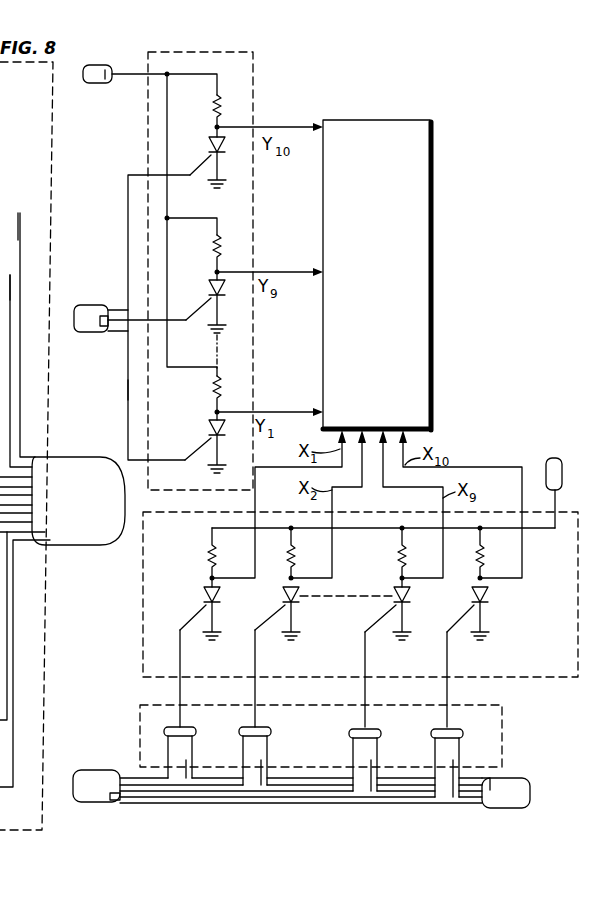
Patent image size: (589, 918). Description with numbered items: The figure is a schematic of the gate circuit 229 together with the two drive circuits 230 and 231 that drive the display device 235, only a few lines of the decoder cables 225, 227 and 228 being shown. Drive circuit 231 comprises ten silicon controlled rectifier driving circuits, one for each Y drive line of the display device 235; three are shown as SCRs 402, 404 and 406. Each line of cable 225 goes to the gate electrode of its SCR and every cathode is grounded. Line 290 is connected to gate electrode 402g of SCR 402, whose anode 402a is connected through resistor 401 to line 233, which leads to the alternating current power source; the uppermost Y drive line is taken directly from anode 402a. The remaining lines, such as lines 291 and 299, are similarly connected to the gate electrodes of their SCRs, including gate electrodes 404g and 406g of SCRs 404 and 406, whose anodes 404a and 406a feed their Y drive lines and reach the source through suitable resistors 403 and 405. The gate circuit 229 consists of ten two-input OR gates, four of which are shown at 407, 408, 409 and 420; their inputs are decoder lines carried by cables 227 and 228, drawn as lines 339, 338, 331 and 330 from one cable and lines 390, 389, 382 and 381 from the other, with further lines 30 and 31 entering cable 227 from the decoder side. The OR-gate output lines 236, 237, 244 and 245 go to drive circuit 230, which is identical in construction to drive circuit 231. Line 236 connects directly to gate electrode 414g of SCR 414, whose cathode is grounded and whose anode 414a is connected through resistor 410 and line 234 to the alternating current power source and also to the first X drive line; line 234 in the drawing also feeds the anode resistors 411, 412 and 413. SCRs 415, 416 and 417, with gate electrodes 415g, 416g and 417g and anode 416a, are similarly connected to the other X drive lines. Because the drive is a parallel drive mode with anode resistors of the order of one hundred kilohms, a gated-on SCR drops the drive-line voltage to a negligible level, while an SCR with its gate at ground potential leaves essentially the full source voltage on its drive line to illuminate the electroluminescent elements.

The cable conductor 30 is at (11, 218).
The cable conductor 31 is at (11, 277).
The cable 225 is at (96, 305).
The cable 227 is at (100, 546).
The cable 228 is at (512, 808).
The gate circuit 229 is at (504, 750).
The drive circuit 230 is at (522, 681).
The drive circuit 231 is at (242, 51).
The line 233 is at (100, 66).
The line 234 is at (553, 458).
The display device 235 is at (432, 114).
The output line 236 is at (180, 690).
The output line 237 is at (255, 690).
The output line 244 is at (365, 692).
The output line 245 is at (447, 692).
The line 290 is at (128, 192).
The line 291 is at (176, 321).
The line 299 is at (128, 392).
The cable wire 330 is at (437, 804).
The cable wire 331 is at (332, 798).
The cable wire 338 is at (222, 792).
The cable wire 339 is at (130, 800).
The wire 381 is at (494, 753).
The wire 382 is at (382, 790).
The wire 389 is at (263, 770).
The wire 390 is at (188, 770).
The resistor 401 is at (213, 104).
The SCR 402 is at (210, 150).
The anode 402a is at (216, 127).
The gate electrode 402g is at (196, 179).
The resistor 403 is at (213, 246).
The SCR 404 is at (210, 291).
The thyristor anode 404a is at (216, 271).
The thyristor gate 404g is at (198, 320).
The resistor 405 is at (213, 388).
The SCR 406 is at (210, 431).
The thyristor anode 406a is at (216, 412).
The thyristor gate 406g is at (194, 461).
The OR gate 407 is at (188, 729).
The OR gate 408 is at (260, 729).
The OR gate 409 is at (373, 730).
The resistor 410 is at (212, 552).
The resistor 411 is at (289, 553).
The resistor 412 is at (432, 548).
The resistor 413 is at (510, 548).
The SCR 414 is at (220, 594).
The anode 414a is at (211, 580).
The gate electrode 414g is at (186, 628).
The thyristor 415 is at (298, 600).
The thyristor gate 415g is at (262, 630).
The thyristor 416 is at (408, 596).
The thyristor anode 416a is at (401, 580).
The thyristor gate 416g is at (371, 630).
The thyristor 417 is at (486, 596).
The thyristor gate 417g is at (453, 630).
The OR gate 420 is at (451, 730).